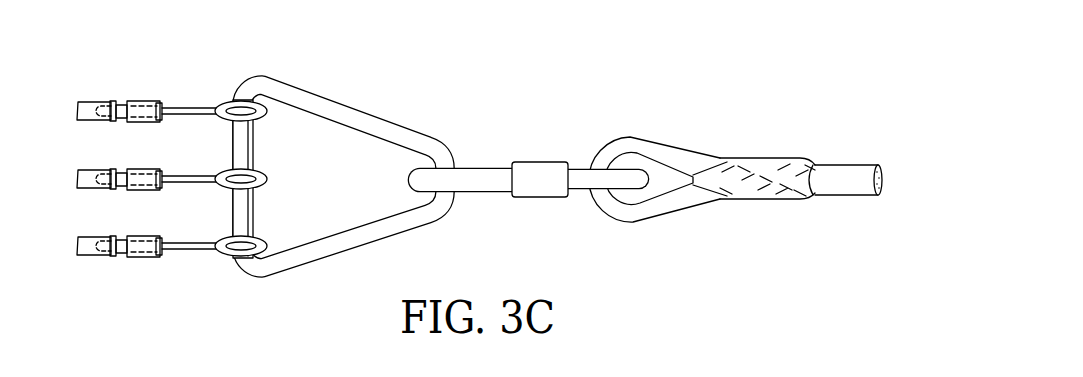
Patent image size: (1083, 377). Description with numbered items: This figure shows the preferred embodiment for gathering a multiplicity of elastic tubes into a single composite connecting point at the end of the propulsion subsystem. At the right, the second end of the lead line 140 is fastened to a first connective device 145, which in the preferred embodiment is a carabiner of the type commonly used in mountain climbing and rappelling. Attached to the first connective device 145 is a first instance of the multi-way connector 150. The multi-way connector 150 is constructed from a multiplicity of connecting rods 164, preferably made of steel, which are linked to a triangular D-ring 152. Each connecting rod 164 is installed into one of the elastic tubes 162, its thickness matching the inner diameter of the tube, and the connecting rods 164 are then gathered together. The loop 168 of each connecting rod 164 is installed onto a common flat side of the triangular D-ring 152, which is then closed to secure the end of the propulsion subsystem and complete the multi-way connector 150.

The multi-way connector 150 is at (221, 38).
The triangular D-ring 152 is at (325, 103).
The elastic tubes 162 is at (88, 119).
The connecting rods 164 is at (183, 115).
The loop 168 is at (267, 108).
The first connective device 145 is at (482, 170).
The lead line 140 is at (857, 170).